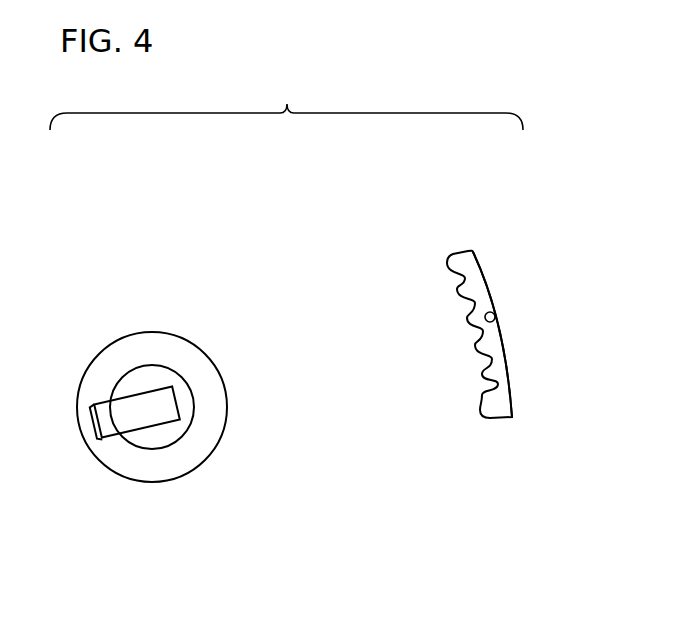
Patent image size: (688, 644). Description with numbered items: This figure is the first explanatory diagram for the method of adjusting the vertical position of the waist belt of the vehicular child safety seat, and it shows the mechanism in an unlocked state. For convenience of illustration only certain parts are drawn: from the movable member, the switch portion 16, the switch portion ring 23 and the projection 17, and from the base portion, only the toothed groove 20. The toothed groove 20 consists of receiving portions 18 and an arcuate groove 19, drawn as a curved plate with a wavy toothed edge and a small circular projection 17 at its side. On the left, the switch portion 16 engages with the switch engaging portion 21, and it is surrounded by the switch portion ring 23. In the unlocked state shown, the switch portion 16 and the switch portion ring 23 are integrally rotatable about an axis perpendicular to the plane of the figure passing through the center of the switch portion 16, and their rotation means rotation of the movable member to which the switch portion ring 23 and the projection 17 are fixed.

The switch portion 16 is at (142, 405).
The projection 17 is at (496, 317).
The receiving portions 18 is at (452, 263).
The arcuate groove 19 is at (480, 274).
The toothed groove 20 is at (428, 177).
The switch engaging portion 21 is at (103, 423).
The switch portion ring 23 is at (175, 353).